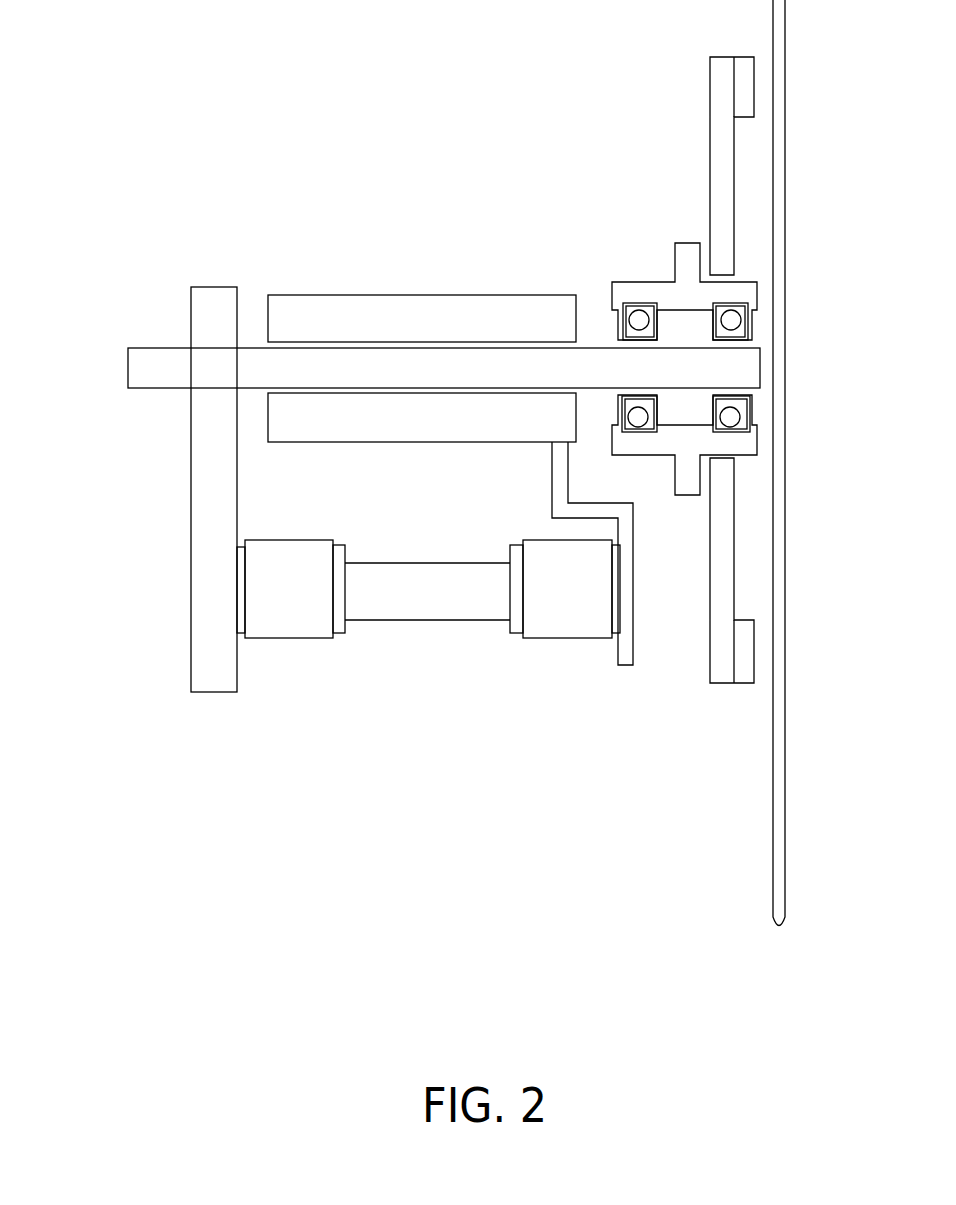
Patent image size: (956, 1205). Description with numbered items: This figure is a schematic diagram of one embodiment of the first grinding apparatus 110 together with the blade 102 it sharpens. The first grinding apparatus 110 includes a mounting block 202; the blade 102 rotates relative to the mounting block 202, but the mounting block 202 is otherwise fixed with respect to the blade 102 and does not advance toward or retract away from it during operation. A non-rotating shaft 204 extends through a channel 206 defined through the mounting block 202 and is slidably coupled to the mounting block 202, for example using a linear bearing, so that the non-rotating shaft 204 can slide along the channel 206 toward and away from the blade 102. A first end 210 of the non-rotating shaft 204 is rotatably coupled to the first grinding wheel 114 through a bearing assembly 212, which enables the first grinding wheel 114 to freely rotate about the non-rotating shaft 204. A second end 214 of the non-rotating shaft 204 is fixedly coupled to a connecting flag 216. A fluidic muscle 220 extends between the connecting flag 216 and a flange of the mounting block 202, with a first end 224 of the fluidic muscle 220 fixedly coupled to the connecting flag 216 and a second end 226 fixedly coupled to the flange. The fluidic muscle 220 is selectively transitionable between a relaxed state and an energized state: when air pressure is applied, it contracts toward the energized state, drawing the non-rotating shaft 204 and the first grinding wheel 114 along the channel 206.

The blade 102 is at (772, 752).
The first grinding apparatus 110 is at (332, 160).
The first grinding wheel 114 is at (710, 93).
The mounting block 202 is at (455, 325).
The non-rotating shaft 204 is at (455, 379).
The channel 206 is at (253, 323).
The first end 210 is at (682, 348).
The bearing assembly 212 is at (617, 302).
The second end 214 is at (163, 390).
The connecting flag 216 is at (208, 590).
The fluidic muscle 220 is at (448, 603).
The first end 224 is at (310, 602).
The second end 226 is at (595, 602).